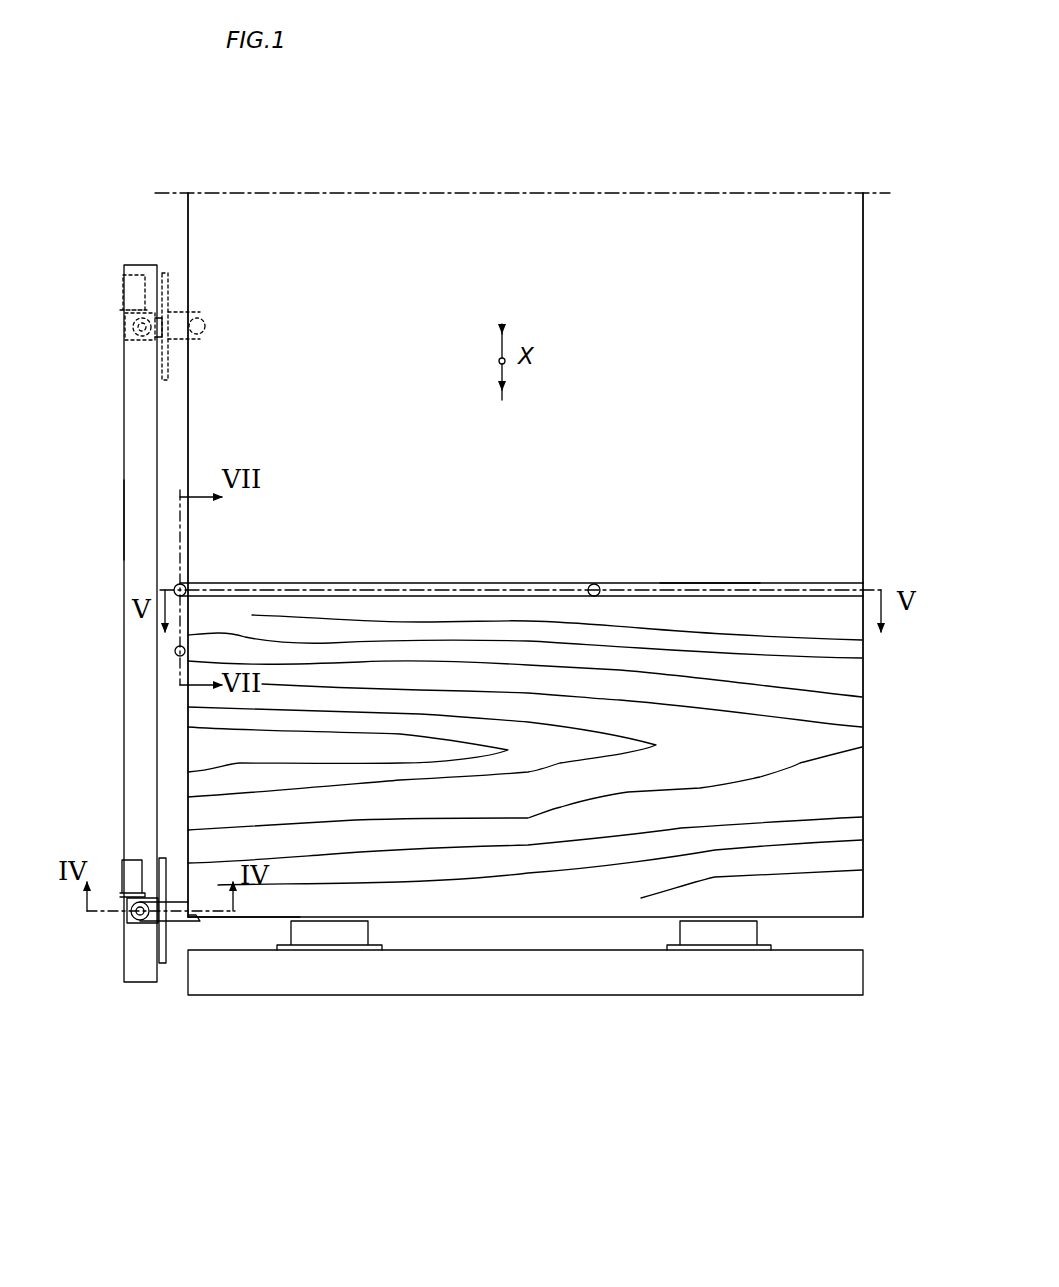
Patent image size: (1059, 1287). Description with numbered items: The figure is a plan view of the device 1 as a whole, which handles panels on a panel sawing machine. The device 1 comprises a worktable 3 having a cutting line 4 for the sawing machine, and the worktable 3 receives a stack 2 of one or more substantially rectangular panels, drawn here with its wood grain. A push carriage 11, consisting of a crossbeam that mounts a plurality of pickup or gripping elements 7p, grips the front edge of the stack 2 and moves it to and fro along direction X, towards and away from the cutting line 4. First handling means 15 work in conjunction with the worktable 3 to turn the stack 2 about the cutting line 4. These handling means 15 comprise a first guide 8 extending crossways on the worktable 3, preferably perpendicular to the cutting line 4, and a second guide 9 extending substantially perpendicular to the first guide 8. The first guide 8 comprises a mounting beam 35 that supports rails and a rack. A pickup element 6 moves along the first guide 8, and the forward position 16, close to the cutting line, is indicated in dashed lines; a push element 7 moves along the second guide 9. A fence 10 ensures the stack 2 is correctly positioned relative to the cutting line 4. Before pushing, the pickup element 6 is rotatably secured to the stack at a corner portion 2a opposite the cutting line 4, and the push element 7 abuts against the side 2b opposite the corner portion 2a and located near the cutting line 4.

The device 1 is at (668, 122).
The stack 2 is at (832, 797).
The corner portion 2a is at (203, 897).
The side 2b is at (684, 596).
The worktable 3 is at (710, 232).
The cutting line 4 is at (468, 191).
The pickup element 6 is at (177, 922).
The push element 7 is at (597, 583).
The pickup or gripping elements 7p is at (343, 932).
The first guide 8 is at (136, 405).
The second guide 9 is at (384, 581).
The fence 10 is at (176, 653).
The push carriage 11 is at (500, 992).
The first handling means 15 is at (112, 970).
The forward position 16 is at (202, 293).
The mounting beam 35 is at (136, 500).